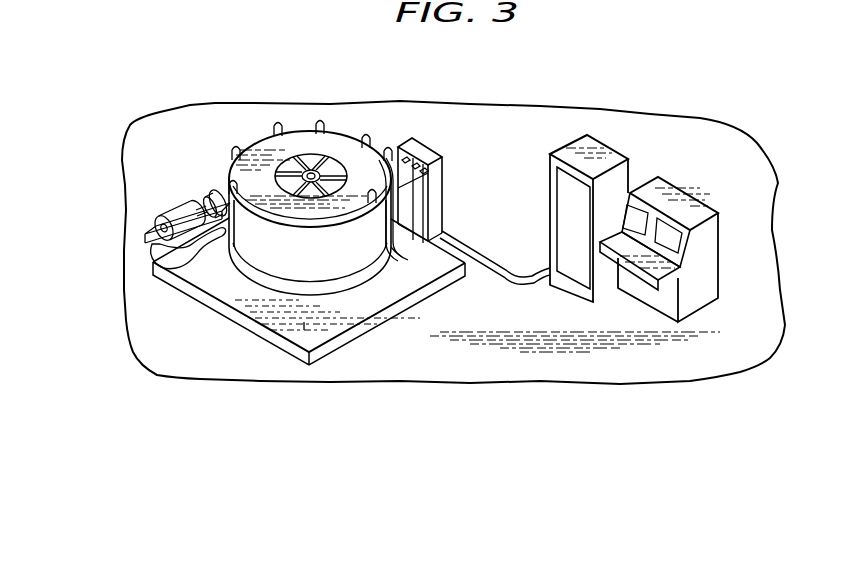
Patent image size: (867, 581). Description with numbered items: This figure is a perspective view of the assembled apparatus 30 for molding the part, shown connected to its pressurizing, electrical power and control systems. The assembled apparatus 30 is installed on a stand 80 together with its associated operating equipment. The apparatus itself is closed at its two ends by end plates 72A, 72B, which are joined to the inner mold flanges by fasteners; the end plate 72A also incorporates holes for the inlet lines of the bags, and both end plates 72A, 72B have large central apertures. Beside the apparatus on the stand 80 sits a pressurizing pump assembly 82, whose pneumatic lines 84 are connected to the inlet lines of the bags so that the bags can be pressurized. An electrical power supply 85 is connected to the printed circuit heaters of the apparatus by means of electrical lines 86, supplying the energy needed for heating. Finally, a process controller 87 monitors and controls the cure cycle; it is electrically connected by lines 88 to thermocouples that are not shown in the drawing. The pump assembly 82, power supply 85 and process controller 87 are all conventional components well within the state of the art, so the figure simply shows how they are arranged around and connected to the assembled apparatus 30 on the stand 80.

The assembled apparatus 30 is at (304, 313).
The end plate 72A is at (265, 297).
The end plate 72B is at (375, 150).
The stand 80 is at (333, 348).
The pressurizing pump assembly 82 is at (172, 204).
The pneumatic lines 84 is at (366, 140).
The electrical power supply 85 is at (417, 150).
The electrical lines 86 is at (407, 256).
The process controller 87 is at (680, 184).
The lines 88 is at (486, 258).